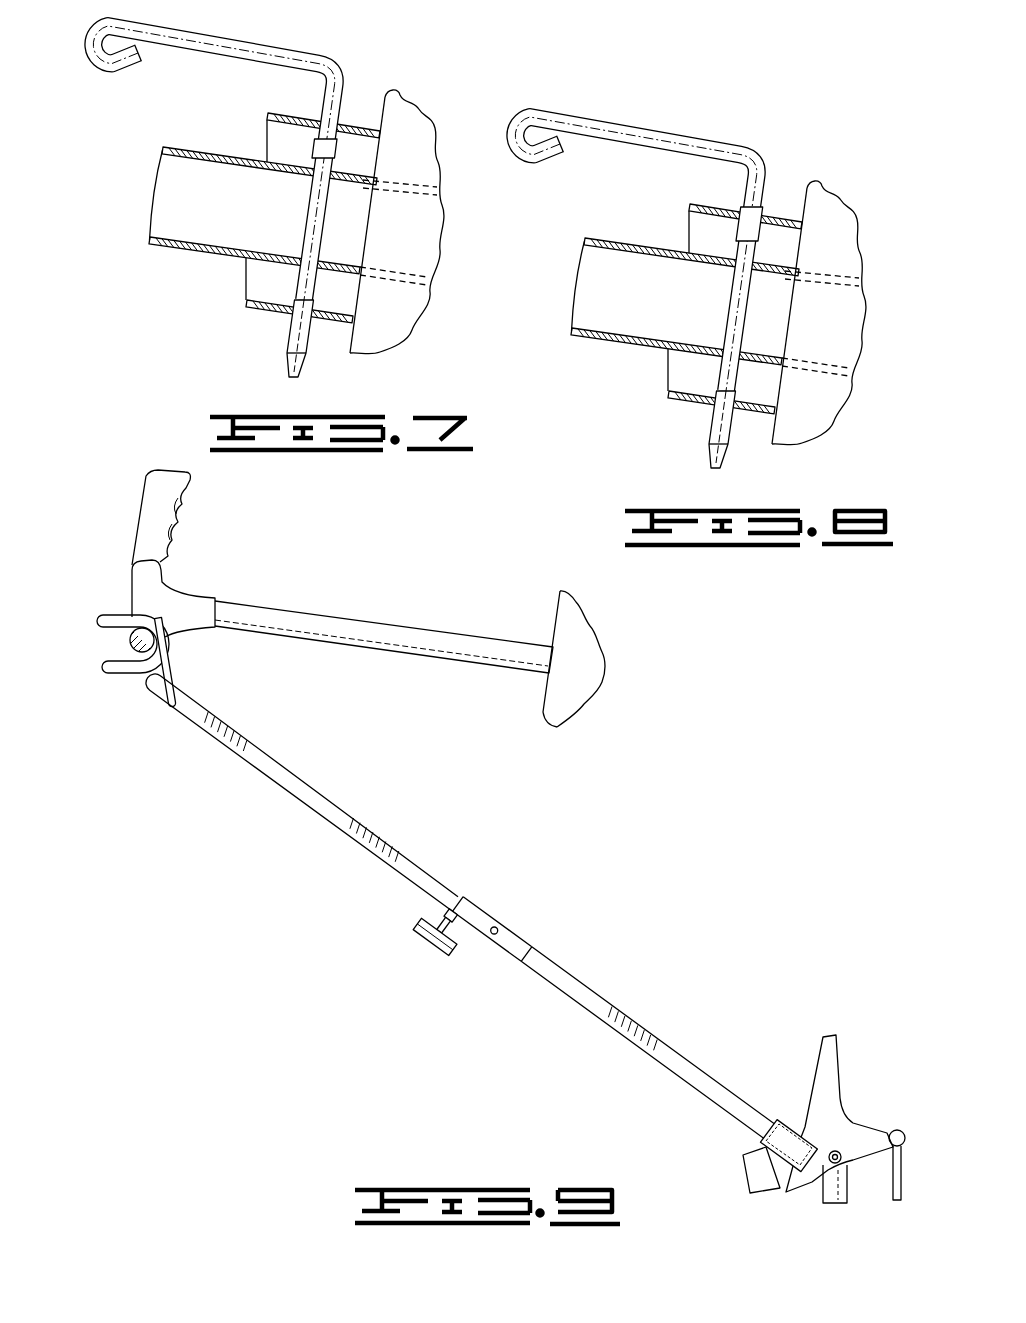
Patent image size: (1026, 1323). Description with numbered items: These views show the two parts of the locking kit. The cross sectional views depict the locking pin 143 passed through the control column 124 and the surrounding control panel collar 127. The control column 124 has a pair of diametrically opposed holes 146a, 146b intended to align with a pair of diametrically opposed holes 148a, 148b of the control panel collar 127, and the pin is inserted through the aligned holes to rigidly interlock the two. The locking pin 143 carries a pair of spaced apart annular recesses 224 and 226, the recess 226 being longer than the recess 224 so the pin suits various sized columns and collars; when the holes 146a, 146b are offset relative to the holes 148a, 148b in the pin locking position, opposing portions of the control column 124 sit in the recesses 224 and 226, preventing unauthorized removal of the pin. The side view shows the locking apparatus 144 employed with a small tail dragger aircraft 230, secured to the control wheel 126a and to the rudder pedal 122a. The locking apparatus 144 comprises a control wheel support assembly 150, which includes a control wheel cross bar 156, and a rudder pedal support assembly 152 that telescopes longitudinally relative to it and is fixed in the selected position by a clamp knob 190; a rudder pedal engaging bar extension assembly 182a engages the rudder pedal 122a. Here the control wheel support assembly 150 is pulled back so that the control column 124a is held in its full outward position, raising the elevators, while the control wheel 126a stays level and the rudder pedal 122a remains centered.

In FIG. 7, the locking pin 143 is at (311, 44).
In FIG. 8, the locking pin 143 is at (663, 278).
In FIG. 7, the hole of the control panel collar 148a is at (340, 118).
In FIG. 8, the hole of the control panel collar 148a is at (797, 194).
In FIG. 7, the hole of the control panel collar 148b is at (312, 328).
In FIG. 8, the hole of the control panel collar 148b is at (769, 435).
In FIG. 7, the annular recess 224 is at (337, 163).
In FIG. 8, the annular recess 224 is at (844, 313).
In FIG. 7, the hole of the control column 146a is at (310, 160).
In FIG. 8, the hole of the control column 146a is at (710, 228).
In FIG. 7, the hole of the control column 146b is at (298, 257).
In FIG. 8, the hole of the control column 146b is at (698, 358).
In FIG. 7, the control column 124 is at (163, 247).
In FIG. 8, the control column 124 is at (656, 301).
In FIG. 7, the annular recess 226 is at (298, 263).
In FIG. 8, the annular recess 226 is at (674, 367).
In FIG. 7, the control panel collar 127 is at (265, 312).
In FIG. 8, the control panel collar 127 is at (648, 393).
In FIG. 9, the control wheel 126a is at (143, 507).
In FIG. 9, the control column 124a is at (343, 617).
In FIG. 9, the small aircraft 230 is at (591, 622).
In FIG. 9, the control wheel cross bar 156 is at (178, 669).
In FIG. 9, the locking apparatus 144 is at (312, 812).
In FIG. 9, the control wheel support assembly 150 is at (401, 843).
In FIG. 9, the rudder pedal support assembly 152 is at (606, 989).
In FIG. 9, the clamp knob 190 is at (430, 950).
In FIG. 9, the rudder pedal 122a is at (843, 1045).
In FIG. 9, the rudder pedal engaging bar extension assembly 182a is at (791, 1171).